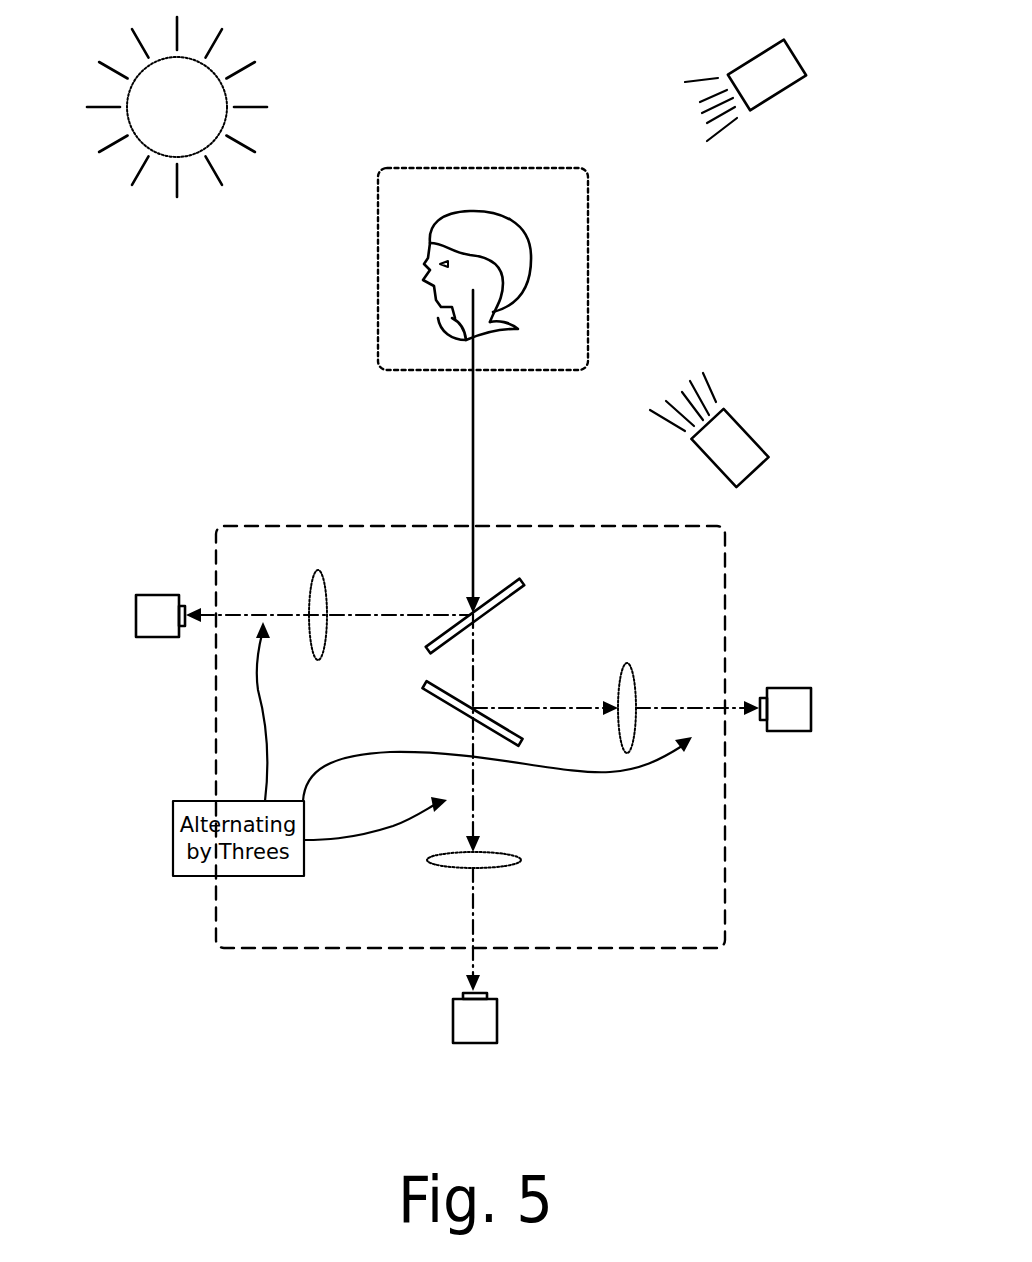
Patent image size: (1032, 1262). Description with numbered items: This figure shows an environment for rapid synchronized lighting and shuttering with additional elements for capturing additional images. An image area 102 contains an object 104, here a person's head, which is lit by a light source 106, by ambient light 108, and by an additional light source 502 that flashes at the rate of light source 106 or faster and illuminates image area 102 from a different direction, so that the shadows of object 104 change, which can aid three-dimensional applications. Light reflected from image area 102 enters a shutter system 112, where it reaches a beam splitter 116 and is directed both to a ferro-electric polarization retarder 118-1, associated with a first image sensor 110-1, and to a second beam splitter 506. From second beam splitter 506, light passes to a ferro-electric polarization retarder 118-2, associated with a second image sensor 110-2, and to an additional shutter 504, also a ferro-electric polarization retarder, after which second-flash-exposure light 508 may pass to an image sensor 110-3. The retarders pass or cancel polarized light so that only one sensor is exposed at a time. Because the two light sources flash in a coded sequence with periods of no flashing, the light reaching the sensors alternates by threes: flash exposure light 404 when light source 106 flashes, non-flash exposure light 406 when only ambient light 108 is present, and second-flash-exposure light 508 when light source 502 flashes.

The image area 102 is at (589, 264).
The object 104 is at (491, 214).
The light source 106 is at (746, 432).
The ambient light 108 is at (150, 214).
The first image sensor 110-1 is at (158, 594).
The second image sensor 110-2 is at (498, 1010).
The image sensor 110-3 is at (791, 687).
The shutter system 112 is at (361, 525).
The beam splitter 116 is at (523, 589).
The ferro-electric polarization retarder 118-1 is at (325, 589).
The ferro-electric polarization retarder 118-2 is at (502, 853).
The flash exposure light 404 is at (264, 614).
The non-flash exposure light 406 is at (475, 918).
The light source 502 is at (757, 54).
The additional shutter 504 is at (622, 677).
The second beam splitter 506 is at (427, 698).
The second-flash-exposure light 508 is at (680, 708).